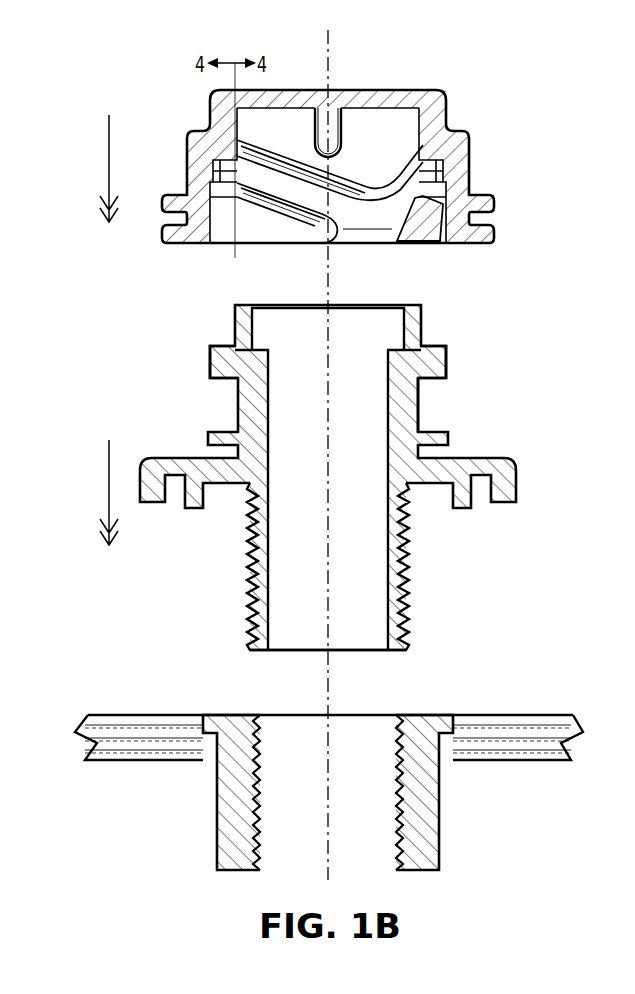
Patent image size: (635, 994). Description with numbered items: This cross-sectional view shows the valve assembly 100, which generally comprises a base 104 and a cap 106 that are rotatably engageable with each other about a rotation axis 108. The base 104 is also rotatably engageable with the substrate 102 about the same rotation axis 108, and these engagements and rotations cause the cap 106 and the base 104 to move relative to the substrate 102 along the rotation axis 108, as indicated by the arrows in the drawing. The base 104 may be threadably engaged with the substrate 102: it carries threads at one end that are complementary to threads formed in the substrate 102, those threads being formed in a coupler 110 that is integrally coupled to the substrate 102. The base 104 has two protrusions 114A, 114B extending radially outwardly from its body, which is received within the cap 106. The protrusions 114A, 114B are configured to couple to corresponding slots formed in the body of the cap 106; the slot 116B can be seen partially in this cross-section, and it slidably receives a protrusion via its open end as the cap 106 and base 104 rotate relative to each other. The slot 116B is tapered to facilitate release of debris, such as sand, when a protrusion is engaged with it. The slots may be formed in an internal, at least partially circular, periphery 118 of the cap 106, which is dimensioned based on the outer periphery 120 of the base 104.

The valve assembly 100 is at (550, 109).
The substrate 102 is at (140, 752).
The base 104 is at (490, 414).
The cap 106 is at (500, 162).
The rotation axis 108 is at (328, 672).
The coupler 110 is at (230, 815).
The protrusion 114A is at (212, 345).
The protrusion 114B is at (450, 343).
The slot 116B is at (391, 223).
The internal periphery 118 is at (380, 133).
The outer periphery 120 is at (420, 388).